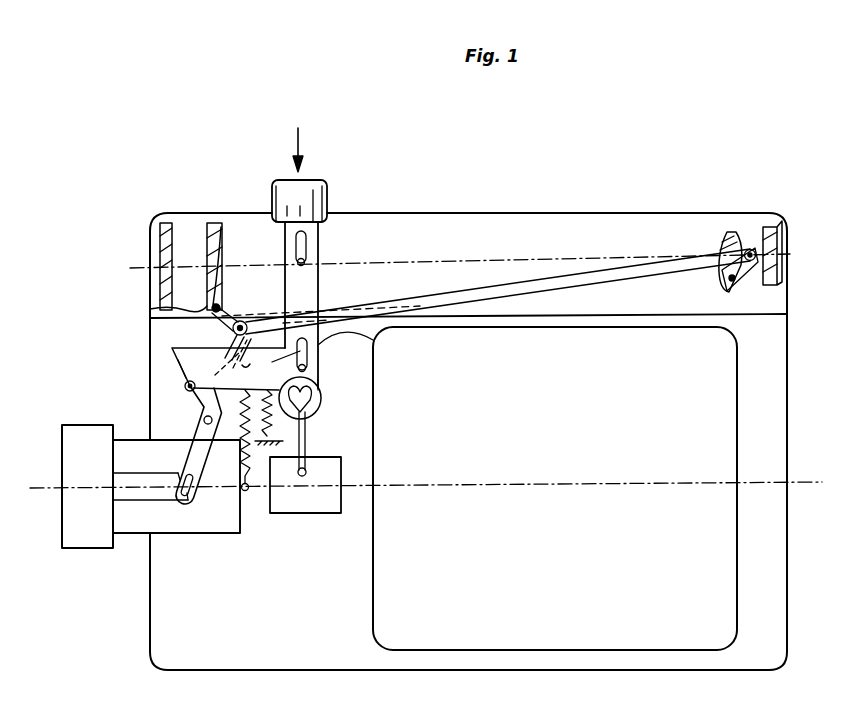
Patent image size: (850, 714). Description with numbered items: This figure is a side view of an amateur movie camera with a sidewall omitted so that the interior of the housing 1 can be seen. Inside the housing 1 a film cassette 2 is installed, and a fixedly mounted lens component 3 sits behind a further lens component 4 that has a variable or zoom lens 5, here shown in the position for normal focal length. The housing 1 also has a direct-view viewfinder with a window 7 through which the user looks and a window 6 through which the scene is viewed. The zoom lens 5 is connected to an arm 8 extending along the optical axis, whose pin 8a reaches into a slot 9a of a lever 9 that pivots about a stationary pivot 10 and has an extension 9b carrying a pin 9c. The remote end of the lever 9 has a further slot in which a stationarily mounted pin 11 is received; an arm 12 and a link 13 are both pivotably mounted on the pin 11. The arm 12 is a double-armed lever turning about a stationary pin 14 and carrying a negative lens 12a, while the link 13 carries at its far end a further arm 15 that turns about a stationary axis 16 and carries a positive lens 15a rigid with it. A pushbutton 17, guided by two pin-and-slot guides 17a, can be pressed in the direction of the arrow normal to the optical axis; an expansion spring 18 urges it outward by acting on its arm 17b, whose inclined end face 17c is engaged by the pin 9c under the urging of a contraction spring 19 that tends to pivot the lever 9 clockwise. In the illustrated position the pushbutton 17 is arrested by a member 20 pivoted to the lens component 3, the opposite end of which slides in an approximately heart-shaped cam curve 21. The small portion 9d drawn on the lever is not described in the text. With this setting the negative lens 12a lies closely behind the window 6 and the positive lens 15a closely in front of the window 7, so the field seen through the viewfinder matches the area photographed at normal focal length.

The housing 1 is at (786, 500).
The film cassette 2 is at (732, 497).
The fixedly mounted lens component 3 is at (332, 493).
The further lens component 4 is at (228, 523).
The zoom lens 5 is at (76, 505).
The window 6 is at (166, 223).
The window 7 is at (770, 227).
The arm 8 is at (145, 503).
The pin 8a is at (187, 501).
The lever 9 is at (194, 455).
The slot 9a is at (200, 488).
The extension 9b is at (185, 377).
The pin 9c is at (186, 387).
The lever extension 9d is at (232, 341).
The stationary pivot 10 is at (204, 420).
The stationarily mounted pin 11 is at (245, 323).
The arm 12 is at (228, 312).
The negative lens 12a is at (212, 223).
The link 13 is at (566, 283).
The stationary pin 14 is at (150, 309).
The further arm 15 is at (746, 270).
The positive lens 15a is at (728, 230).
The stationary axis 16 is at (728, 284).
The pushbutton 17 is at (314, 198).
The pin-and-slot guides 17a is at (308, 246).
The arm 17b is at (378, 340).
The inclined end face 17c is at (175, 362).
The expansion spring 18 is at (320, 388).
The contraction spring 19 is at (242, 425).
The member 20 is at (308, 420).
The cam curve 21 is at (312, 404).